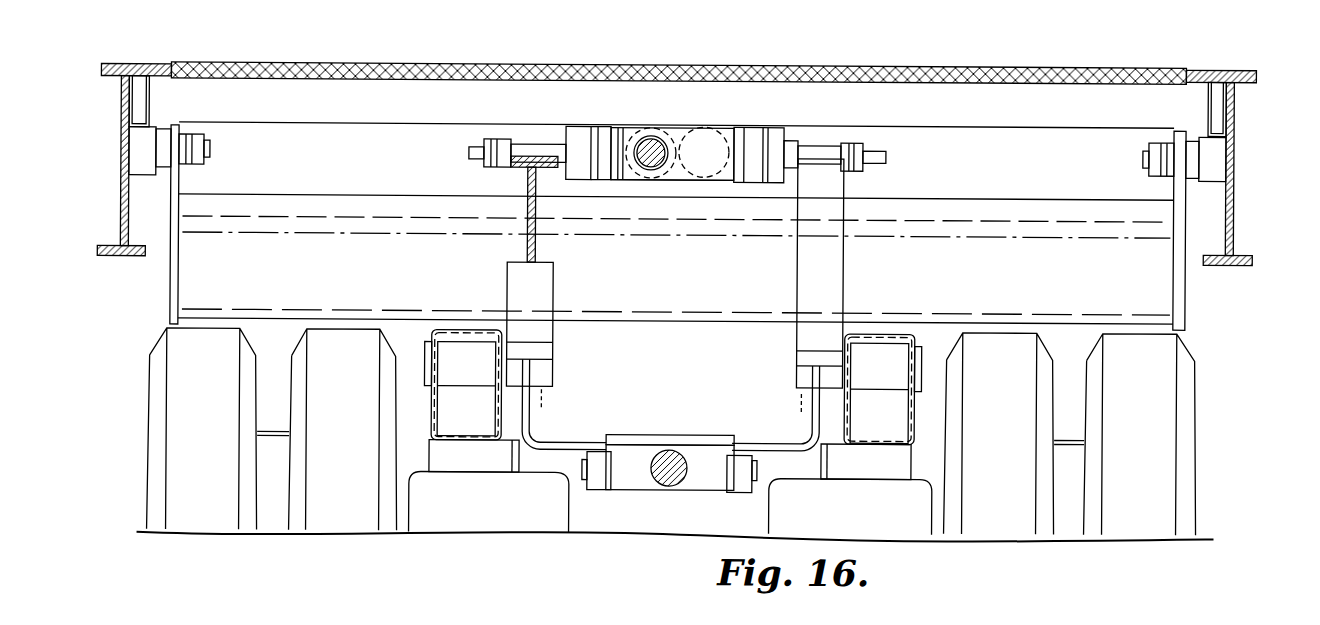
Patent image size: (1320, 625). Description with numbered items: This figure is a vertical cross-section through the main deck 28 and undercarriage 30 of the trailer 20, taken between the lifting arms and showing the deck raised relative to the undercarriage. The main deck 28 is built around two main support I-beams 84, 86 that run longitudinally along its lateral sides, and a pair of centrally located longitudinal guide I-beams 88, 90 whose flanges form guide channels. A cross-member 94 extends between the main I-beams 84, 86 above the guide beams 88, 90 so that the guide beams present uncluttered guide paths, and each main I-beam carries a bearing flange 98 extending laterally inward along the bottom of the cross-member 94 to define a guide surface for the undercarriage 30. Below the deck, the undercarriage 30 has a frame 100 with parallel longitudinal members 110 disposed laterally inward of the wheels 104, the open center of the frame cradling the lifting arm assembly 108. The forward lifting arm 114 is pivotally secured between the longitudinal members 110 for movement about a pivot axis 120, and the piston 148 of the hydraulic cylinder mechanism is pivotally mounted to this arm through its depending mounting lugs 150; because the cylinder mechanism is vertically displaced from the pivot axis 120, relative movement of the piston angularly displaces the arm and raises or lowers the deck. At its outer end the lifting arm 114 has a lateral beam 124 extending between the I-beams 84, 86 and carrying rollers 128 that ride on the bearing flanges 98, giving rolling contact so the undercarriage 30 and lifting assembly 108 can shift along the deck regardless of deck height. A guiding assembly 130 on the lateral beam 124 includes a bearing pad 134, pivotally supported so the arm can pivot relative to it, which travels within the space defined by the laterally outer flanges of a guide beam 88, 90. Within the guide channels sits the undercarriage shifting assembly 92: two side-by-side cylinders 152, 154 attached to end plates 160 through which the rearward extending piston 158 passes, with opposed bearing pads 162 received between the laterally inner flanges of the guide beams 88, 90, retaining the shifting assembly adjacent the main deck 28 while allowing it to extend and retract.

The trailer 20 is at (198, 550).
The main deck 28 is at (882, 68).
The undercarriage 30 is at (925, 334).
The main support I-beam 84 is at (125, 80).
The main support I-beam 86 is at (1234, 190).
The longitudinal I-beam 88 is at (590, 128).
The longitudinal I-beam 90 is at (765, 128).
The undercarriage shifting assembly 92 is at (684, 125).
The cross-member 94 is at (1013, 128).
The bearing flange 98 is at (150, 126).
The frame 100 is at (429, 327).
The wheel 104 is at (170, 480).
The lifting arm assembly 108 is at (158, 286).
The longitudinal member 110 is at (428, 402).
The forward lifting arm 114 is at (517, 280).
The pivot axis 120 is at (875, 385).
The lateral beam 124 is at (270, 205).
The roller 128 is at (135, 150).
The guiding assembly 130 is at (563, 125).
The bearing pad 134 is at (557, 194).
The piston 148 is at (670, 450).
The mounting lug 150 is at (605, 490).
The cylinder 152 is at (722, 185).
The cylinder 154 is at (630, 183).
The rearward extending piston 158 is at (650, 140).
The end plate 160 is at (680, 182).
The bearing pad 162 is at (620, 128).